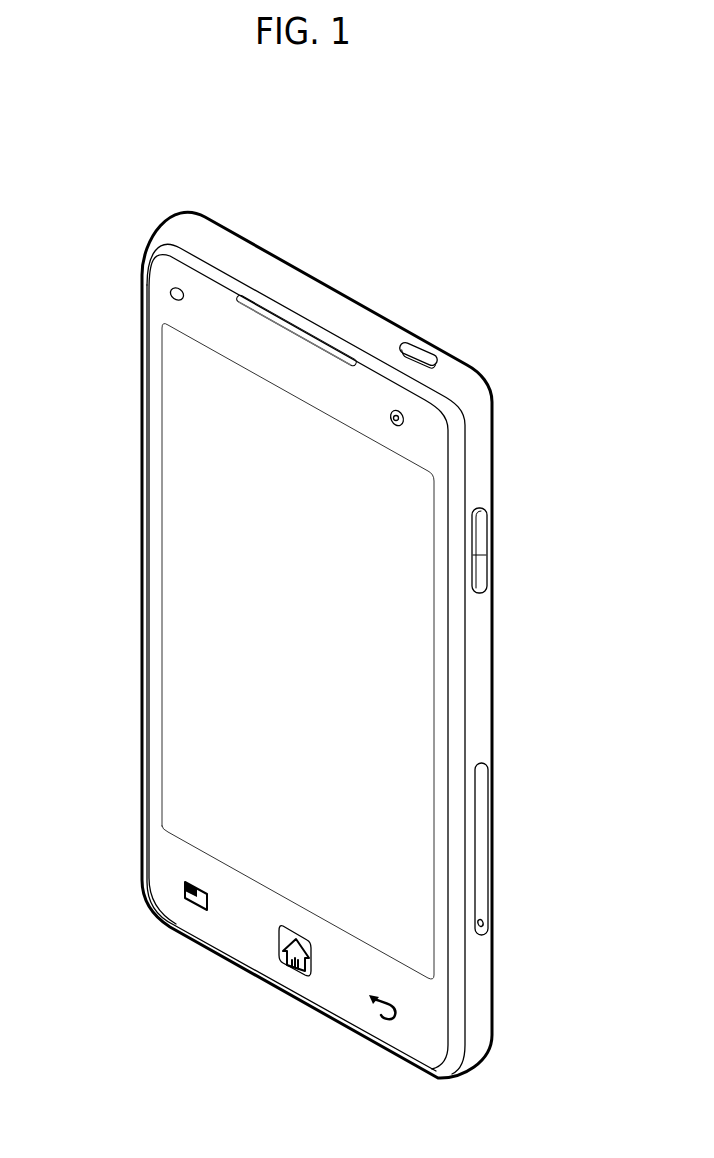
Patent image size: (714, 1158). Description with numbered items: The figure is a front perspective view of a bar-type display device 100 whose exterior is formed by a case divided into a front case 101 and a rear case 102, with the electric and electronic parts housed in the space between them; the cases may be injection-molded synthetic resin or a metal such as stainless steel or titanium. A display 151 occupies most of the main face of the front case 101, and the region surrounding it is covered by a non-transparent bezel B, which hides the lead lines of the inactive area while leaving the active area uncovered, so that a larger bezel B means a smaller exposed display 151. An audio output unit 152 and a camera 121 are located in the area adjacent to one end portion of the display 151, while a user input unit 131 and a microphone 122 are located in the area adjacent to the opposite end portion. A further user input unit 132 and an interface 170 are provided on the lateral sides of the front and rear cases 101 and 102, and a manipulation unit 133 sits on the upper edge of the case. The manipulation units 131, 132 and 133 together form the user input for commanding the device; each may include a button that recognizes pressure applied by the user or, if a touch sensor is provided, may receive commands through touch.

The display device 100 is at (522, 256).
The front case 101 is at (457, 1013).
The rear case 102 is at (480, 408).
The bezel B is at (207, 307).
The camera 121 is at (406, 418).
The microphone 122 is at (170, 294).
The user input unit 131 is at (291, 963).
The user input unit 132 is at (480, 540).
The manipulation unit 133 is at (418, 354).
The display 151 is at (178, 612).
The audio output unit 152 is at (292, 328).
The interface 170 is at (480, 846).